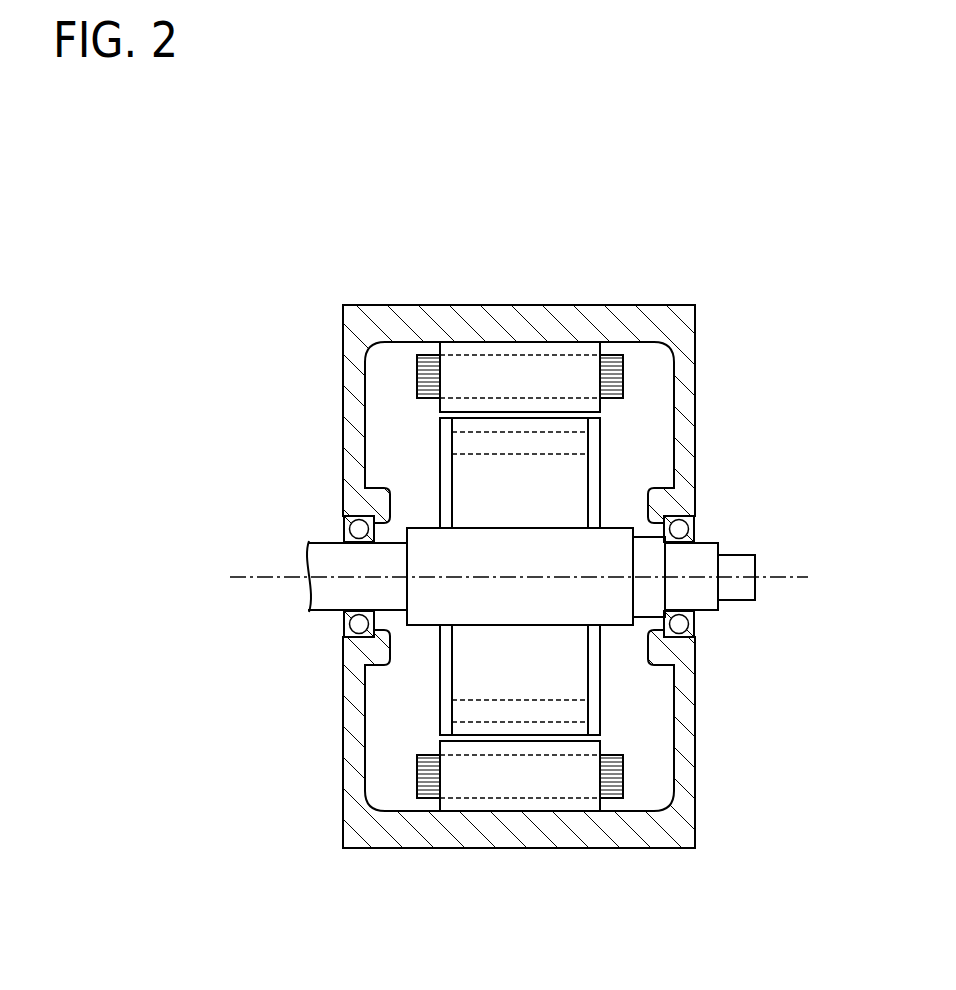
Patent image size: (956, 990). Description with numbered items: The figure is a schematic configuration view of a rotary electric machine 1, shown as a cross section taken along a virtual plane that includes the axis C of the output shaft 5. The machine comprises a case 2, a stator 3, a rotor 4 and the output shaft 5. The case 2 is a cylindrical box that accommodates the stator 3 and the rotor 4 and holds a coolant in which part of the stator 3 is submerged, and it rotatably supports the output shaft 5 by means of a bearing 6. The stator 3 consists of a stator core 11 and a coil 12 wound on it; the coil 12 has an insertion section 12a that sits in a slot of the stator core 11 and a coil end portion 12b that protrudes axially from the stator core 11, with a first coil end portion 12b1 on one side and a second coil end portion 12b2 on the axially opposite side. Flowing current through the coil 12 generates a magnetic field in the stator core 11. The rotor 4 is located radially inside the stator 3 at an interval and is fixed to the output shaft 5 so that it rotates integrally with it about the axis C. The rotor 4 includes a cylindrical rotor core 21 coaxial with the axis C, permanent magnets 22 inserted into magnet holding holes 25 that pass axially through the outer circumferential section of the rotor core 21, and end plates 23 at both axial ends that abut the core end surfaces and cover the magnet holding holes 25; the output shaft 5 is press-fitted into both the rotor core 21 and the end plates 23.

The rotary electric machine 1 is at (772, 166).
The case 2 is at (656, 296).
The stator 3 is at (572, 509).
The rotor 4 is at (517, 493).
The output shaft 5 is at (748, 588).
The bearing 6 is at (348, 531).
The stator core 11 is at (541, 350).
The coil 12 is at (572, 521).
The insertion section 12a is at (572, 355).
The coil end portion 12b is at (593, 521).
The first coil end portion 12b1 is at (427, 354).
The second coil end portion 12b2 is at (623, 373).
The rotor core 21 is at (570, 478).
The magnets 22 is at (465, 441).
The end plates 23 is at (445, 462).
The magnet holding holes 25 is at (497, 437).
The axis C is at (790, 574).